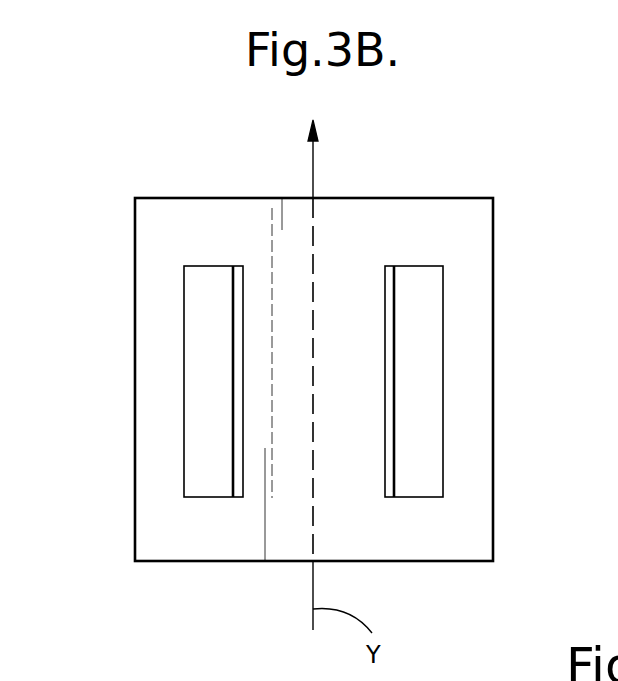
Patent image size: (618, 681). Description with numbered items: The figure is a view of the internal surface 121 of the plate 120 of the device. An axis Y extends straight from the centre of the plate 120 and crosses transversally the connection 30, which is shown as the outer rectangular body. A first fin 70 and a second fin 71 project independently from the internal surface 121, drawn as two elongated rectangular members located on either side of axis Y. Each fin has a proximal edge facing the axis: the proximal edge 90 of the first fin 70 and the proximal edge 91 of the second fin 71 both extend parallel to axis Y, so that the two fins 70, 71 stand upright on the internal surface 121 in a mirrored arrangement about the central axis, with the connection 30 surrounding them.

The connection 30 is at (208, 565).
The plate 120 is at (203, 185).
The internal surface 121 is at (411, 235).
The first fin 70 is at (213, 407).
The proximal edge of first fin 90 is at (184, 340).
The second fin 71 is at (419, 344).
The proximal edge of second fin 91 is at (443, 422).